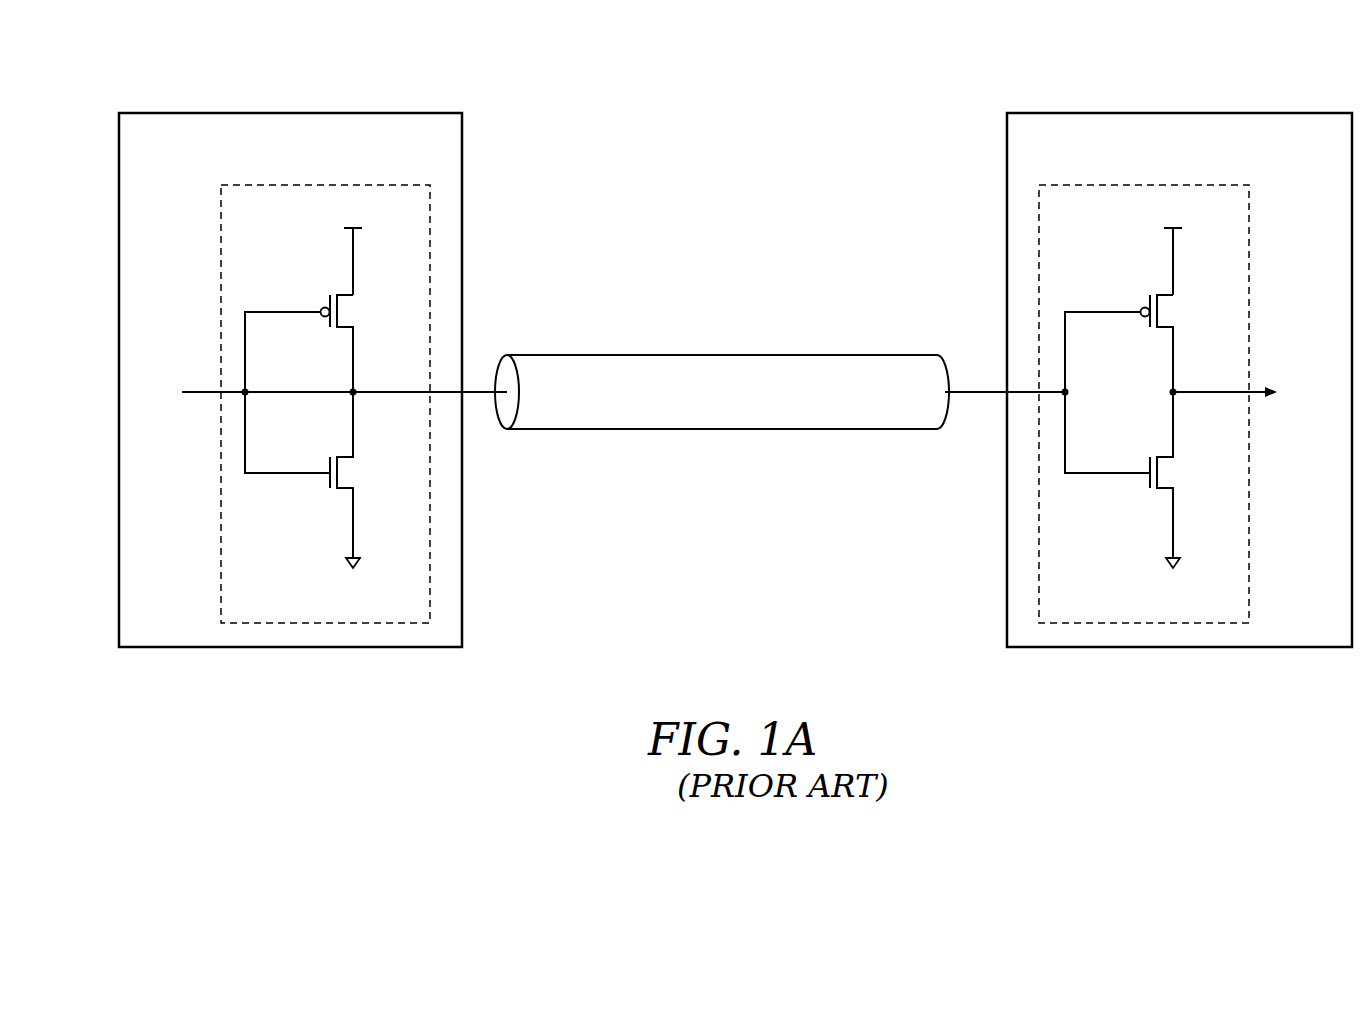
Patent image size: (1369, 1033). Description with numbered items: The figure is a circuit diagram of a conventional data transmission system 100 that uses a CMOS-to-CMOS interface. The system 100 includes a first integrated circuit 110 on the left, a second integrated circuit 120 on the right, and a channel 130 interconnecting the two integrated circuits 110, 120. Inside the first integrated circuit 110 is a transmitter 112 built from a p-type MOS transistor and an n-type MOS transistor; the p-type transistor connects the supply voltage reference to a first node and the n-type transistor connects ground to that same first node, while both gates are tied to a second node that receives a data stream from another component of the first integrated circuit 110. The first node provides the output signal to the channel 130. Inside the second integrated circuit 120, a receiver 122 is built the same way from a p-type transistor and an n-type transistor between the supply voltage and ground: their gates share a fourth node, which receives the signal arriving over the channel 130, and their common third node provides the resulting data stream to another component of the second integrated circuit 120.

The data transmission system 100 is at (713, 108).
The first integrated circuit 110 is at (290, 113).
The transmitter 112 is at (273, 185).
The second integrated circuit 120 is at (1180, 113).
The receiver 122 is at (1092, 185).
The channel 130 is at (760, 354).